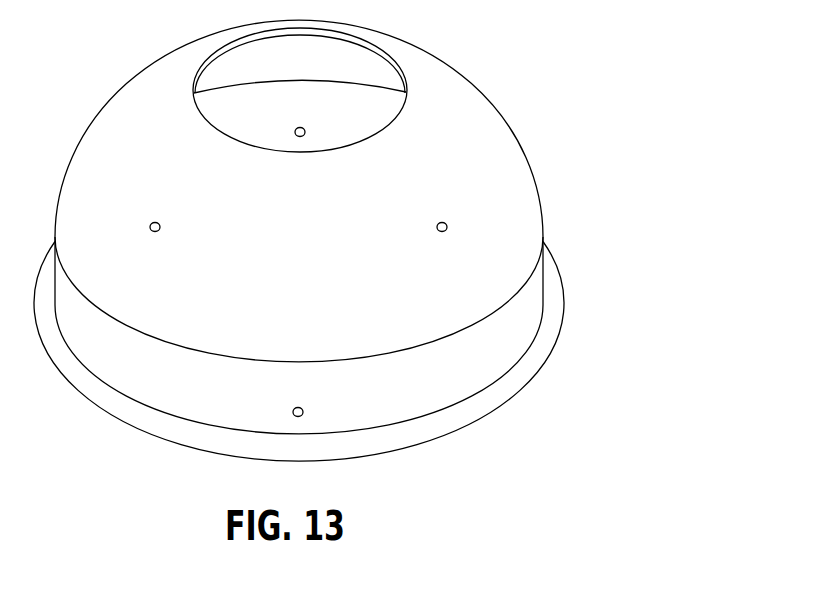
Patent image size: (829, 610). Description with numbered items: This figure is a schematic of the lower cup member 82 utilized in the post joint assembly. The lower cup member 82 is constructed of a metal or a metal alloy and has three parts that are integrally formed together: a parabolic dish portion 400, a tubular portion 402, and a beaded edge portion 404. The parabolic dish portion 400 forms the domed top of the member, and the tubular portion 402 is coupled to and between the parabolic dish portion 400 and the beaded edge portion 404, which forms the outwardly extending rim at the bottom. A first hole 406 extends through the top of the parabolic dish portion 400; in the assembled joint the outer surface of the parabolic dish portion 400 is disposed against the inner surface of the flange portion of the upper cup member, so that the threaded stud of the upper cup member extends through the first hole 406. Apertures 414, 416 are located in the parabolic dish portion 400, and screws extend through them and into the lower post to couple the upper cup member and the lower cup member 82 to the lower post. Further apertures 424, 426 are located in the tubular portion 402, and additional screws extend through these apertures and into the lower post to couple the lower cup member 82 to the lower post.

The lower cup member 82 is at (372, 238).
The parabolic dish portion 400 is at (353, 128).
The tubular portion 402 is at (367, 332).
The beaded edge portion 404 is at (342, 352).
The first hole 406 is at (311, 105).
The aperture 414 is at (210, 212).
The aperture 416 is at (488, 212).
The aperture 424 is at (342, 112).
The aperture 426 is at (370, 389).